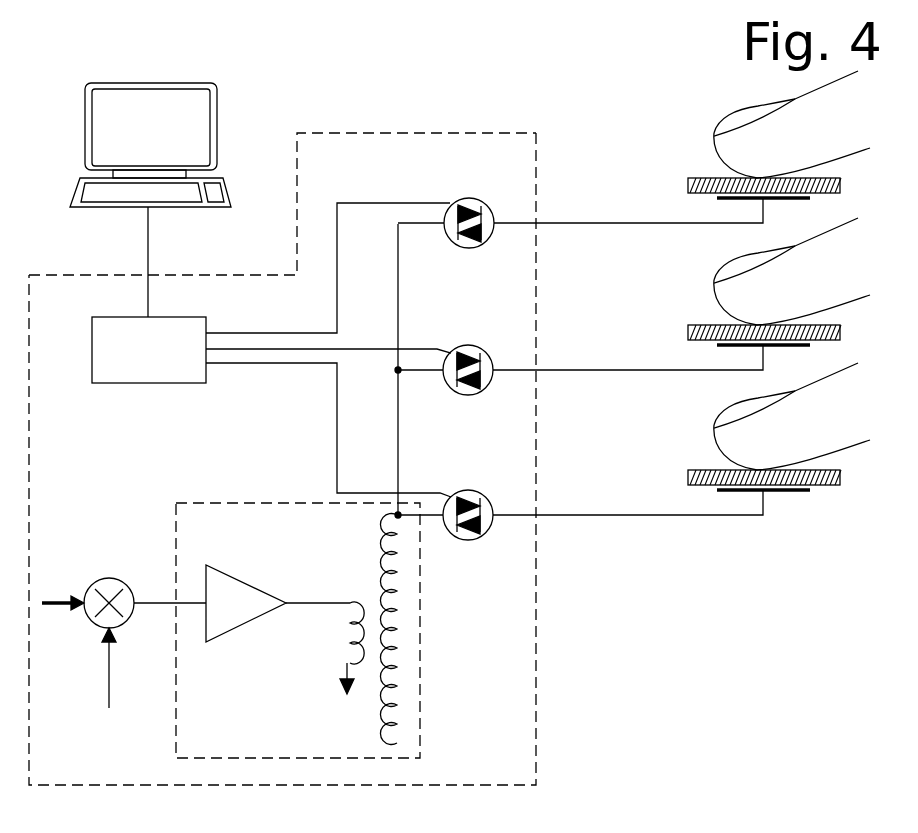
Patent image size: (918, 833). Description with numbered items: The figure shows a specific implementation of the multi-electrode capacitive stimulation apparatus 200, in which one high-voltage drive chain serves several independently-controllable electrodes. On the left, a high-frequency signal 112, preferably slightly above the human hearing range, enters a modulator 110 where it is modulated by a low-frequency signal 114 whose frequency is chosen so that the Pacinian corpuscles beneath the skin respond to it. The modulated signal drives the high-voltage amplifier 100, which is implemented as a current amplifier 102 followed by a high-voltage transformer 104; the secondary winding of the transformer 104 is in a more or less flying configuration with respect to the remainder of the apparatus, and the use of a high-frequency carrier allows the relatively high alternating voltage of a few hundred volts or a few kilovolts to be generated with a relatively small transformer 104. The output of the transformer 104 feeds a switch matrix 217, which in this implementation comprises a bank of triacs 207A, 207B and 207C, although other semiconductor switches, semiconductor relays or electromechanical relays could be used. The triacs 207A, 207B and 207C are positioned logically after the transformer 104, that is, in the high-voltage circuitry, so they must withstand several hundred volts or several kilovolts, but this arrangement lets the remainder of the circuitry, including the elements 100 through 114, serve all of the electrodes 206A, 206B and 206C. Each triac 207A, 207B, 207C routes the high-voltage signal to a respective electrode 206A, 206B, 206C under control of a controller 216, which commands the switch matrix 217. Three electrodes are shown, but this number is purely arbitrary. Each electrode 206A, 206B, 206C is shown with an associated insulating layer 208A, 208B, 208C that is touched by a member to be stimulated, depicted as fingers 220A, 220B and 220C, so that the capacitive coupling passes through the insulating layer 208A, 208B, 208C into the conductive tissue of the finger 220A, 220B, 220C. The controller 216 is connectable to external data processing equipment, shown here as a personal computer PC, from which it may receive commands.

The high-voltage amplifier 100 is at (420, 630).
The current amplifier 102 is at (250, 580).
The high-voltage transformer 104 is at (342, 600).
The modulator 110 is at (113, 578).
The high-frequency signal 112 is at (62, 600).
The low-frequency signal 114 is at (108, 675).
The apparatus with multiple independently-controllable electrodes 200 is at (536, 630).
The electrode 206A is at (718, 200).
The electrode 206B is at (718, 347).
The electrode 206C is at (718, 492).
The triac 207A is at (455, 205).
The triac 207B is at (462, 346).
The triac 207C is at (464, 491).
The dielectric / contact pad 208A is at (707, 177).
The dielectric / contact pad 208B is at (707, 324).
The dielectric / contact pad 208C is at (707, 469).
The controller 216 is at (146, 383).
The switch matrix 217 is at (468, 124).
The finger 220A is at (792, 124).
The finger 220B is at (792, 271).
The finger 220C is at (792, 416).
The personal computer PC is at (217, 97).